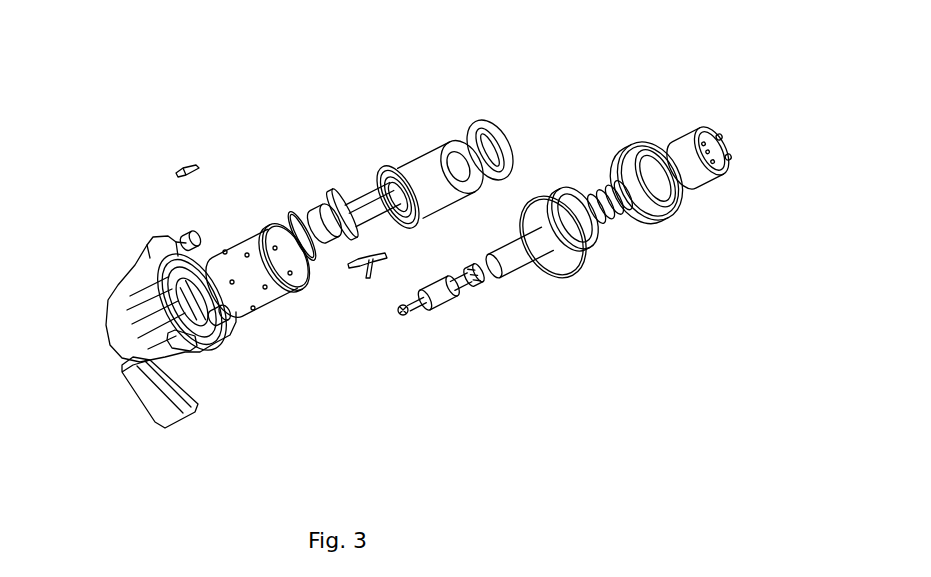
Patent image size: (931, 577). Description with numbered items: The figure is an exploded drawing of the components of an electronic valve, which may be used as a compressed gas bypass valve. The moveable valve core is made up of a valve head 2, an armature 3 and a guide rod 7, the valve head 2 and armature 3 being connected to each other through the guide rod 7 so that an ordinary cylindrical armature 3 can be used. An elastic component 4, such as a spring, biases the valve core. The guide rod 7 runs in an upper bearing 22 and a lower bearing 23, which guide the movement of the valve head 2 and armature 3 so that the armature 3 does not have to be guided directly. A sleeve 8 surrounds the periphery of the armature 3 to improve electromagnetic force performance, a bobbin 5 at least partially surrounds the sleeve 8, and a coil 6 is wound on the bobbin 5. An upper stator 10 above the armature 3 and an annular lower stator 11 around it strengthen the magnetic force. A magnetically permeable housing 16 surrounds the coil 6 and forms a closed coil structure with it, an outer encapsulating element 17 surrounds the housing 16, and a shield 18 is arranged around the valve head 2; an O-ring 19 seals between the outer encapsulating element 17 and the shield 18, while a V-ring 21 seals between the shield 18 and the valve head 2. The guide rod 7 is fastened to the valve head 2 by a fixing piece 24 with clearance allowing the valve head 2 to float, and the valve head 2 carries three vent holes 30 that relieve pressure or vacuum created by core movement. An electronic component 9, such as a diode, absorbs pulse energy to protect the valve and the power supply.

The valve head 2 is at (687, 127).
The armature 3 is at (449, 302).
The elastic component 4 is at (603, 182).
The bobbin 5 is at (372, 190).
The coil 6 is at (422, 147).
The guide rod 7 is at (419, 308).
The sleeve 8 is at (524, 274).
The electronic component 9 is at (184, 170).
The upper stator 10 is at (303, 210).
The lower stator 11 is at (475, 120).
The housing 16 is at (263, 227).
The outer encapsulating element 17 is at (145, 283).
The shield 18 is at (627, 137).
The O-ring 19 is at (584, 278).
The V-ring 21 is at (598, 238).
The upper bearing 22 is at (402, 316).
The lower bearing 23 is at (481, 284).
The fixing piece 24 is at (723, 137).
The vent hole 30 is at (711, 153).